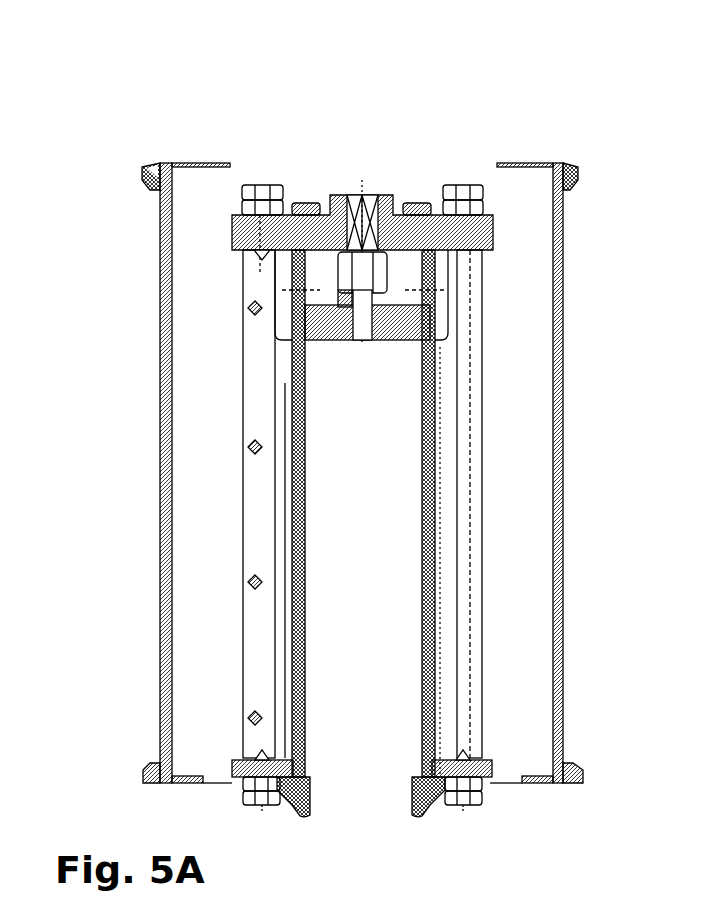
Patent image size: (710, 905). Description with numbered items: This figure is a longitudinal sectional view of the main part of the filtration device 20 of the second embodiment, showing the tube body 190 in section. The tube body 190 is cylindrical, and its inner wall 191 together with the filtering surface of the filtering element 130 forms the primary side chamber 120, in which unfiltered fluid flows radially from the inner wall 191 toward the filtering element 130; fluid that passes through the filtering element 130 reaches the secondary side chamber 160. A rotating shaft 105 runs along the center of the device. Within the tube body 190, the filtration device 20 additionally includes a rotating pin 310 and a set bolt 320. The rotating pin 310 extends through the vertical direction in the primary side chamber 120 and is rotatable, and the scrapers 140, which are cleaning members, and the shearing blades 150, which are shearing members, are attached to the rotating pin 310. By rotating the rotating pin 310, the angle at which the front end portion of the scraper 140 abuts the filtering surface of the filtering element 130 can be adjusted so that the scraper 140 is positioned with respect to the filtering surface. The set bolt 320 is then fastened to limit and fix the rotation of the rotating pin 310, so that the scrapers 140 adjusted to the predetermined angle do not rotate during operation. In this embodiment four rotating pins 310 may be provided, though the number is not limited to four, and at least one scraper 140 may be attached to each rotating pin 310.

The filtration device 20 is at (162, 136).
The rotating shaft 105 is at (362, 195).
The primary side chamber 120 is at (220, 622).
The filtering element 130 is at (298, 505).
The scraper 140 is at (272, 407).
The shearing blade 150 is at (260, 477).
The secondary side chamber 160 is at (340, 542).
The tube body 190 is at (560, 529).
The inner wall 191 is at (560, 600).
The rotating pin 310 is at (258, 357).
The set bolt 320 is at (265, 183).